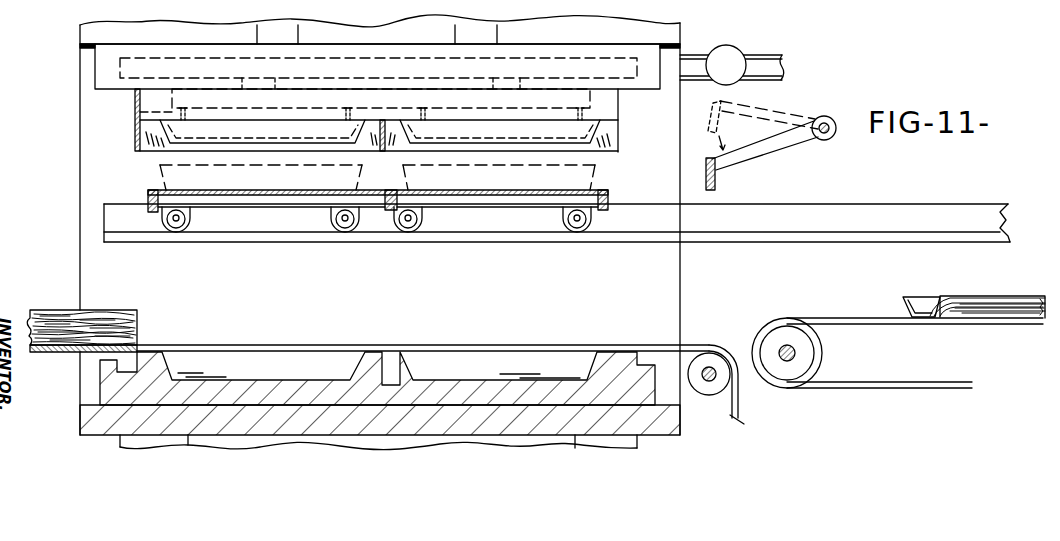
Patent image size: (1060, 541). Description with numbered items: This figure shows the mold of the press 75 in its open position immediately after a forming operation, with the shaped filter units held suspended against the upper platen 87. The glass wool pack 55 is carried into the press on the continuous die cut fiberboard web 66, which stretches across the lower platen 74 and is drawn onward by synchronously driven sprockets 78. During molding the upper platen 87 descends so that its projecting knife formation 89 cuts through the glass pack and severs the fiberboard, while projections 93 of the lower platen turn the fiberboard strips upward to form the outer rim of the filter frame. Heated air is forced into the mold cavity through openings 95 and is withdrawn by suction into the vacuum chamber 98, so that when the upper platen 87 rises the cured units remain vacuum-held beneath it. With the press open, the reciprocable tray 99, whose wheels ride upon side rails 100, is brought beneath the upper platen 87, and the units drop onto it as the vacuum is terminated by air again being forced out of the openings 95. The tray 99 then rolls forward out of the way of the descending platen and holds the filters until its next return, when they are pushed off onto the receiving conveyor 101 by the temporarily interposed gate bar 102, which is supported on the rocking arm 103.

The press 75 is at (684, 34).
The upper platen 87 is at (100, 78).
The openings 95 is at (140, 112).
The knife formation 89 is at (135, 131).
The vacuum chamber 98 is at (580, 130).
The reciprocable tray 99 is at (150, 191).
The side rails 100 is at (152, 243).
The glass wool pack 55 is at (60, 318).
The fiberboard web 66 is at (73, 354).
The projections 93 is at (607, 352).
The lower platen 74 is at (82, 425).
The sprockets 78 is at (701, 392).
The receiving conveyor 101 is at (853, 325).
The gate bar 102 is at (718, 181).
The rocking arm 103 is at (797, 145).